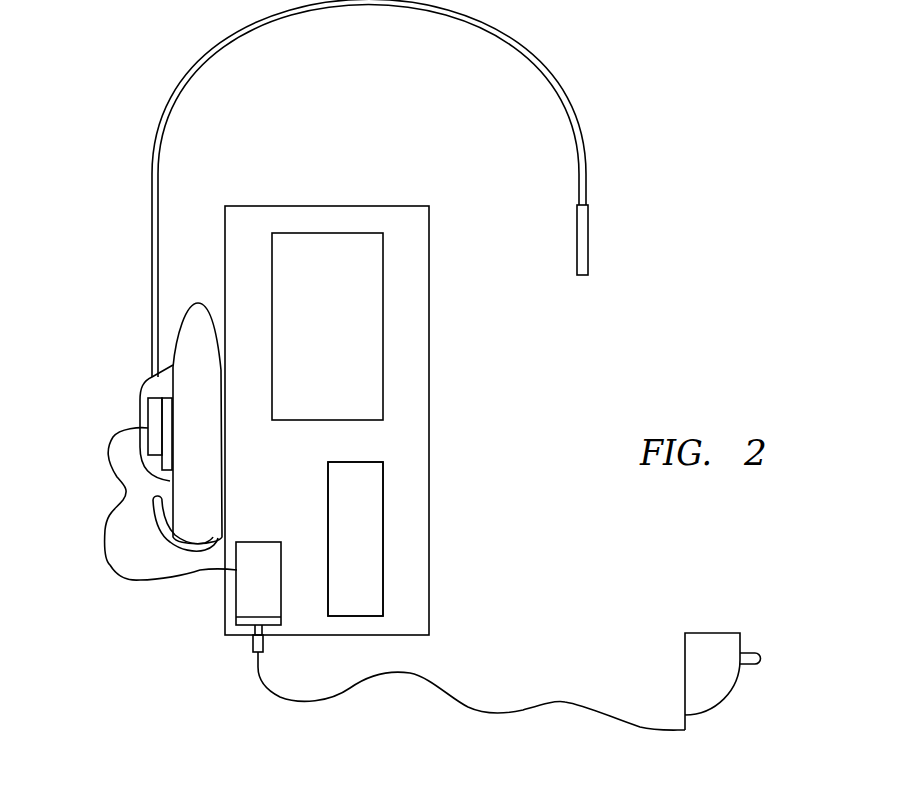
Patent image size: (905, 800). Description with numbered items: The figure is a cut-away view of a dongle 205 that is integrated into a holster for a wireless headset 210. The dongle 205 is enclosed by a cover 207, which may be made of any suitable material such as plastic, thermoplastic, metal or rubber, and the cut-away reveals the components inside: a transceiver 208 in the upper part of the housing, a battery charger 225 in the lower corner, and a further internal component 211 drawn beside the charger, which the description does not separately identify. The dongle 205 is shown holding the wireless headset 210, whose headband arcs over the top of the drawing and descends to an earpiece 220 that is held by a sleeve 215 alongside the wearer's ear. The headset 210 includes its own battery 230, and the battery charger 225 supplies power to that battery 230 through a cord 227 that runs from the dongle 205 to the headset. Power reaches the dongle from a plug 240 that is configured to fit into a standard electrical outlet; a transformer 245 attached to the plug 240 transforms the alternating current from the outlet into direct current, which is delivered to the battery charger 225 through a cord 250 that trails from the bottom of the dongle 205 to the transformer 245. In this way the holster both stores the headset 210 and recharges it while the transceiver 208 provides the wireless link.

The dongle 205 is at (410, 536).
The cover 207 is at (430, 322).
The transceiver 208 is at (328, 255).
The wireless headset 210 is at (206, 62).
The circuit board 211 is at (368, 588).
The sleeve 215 is at (167, 538).
The earpiece 220 is at (197, 317).
The battery charger 225 is at (243, 600).
The cord 227 is at (107, 527).
The battery 230 is at (143, 382).
The plug 240 is at (748, 665).
The transformer 245 is at (710, 643).
The cord 250 is at (563, 700).